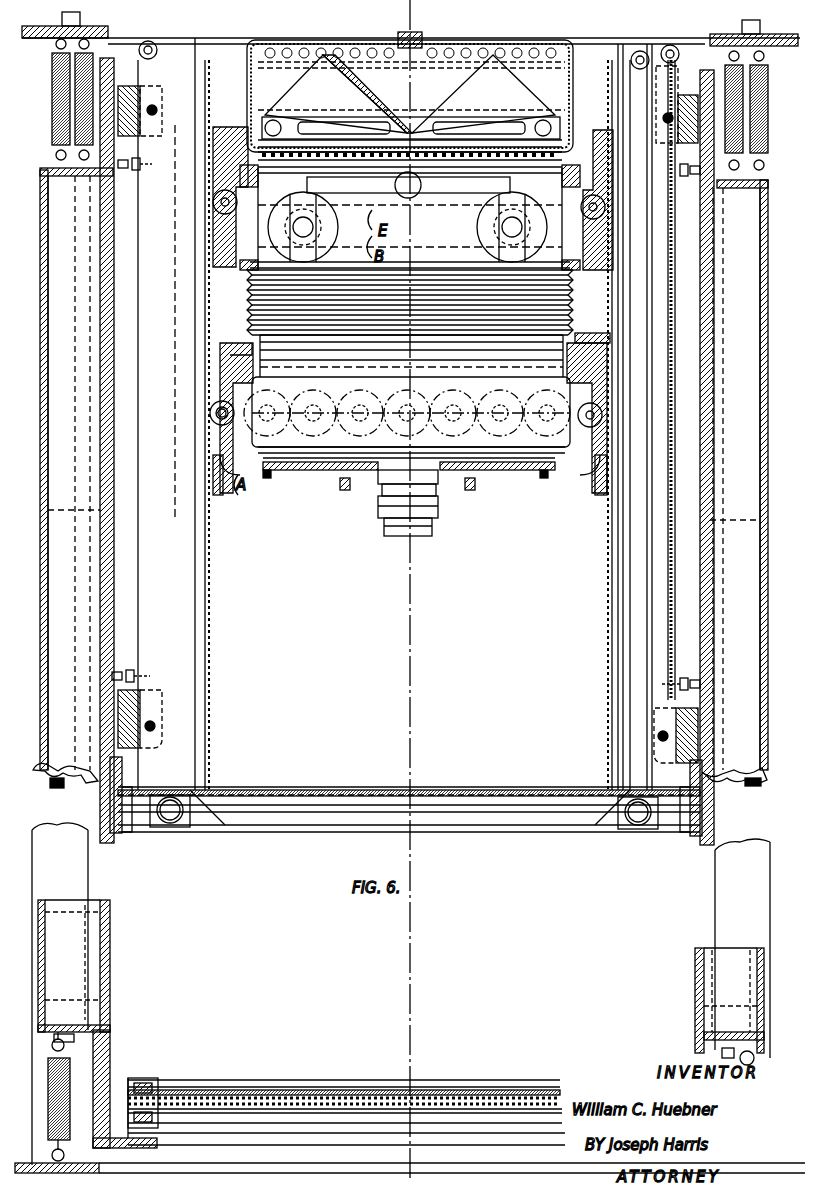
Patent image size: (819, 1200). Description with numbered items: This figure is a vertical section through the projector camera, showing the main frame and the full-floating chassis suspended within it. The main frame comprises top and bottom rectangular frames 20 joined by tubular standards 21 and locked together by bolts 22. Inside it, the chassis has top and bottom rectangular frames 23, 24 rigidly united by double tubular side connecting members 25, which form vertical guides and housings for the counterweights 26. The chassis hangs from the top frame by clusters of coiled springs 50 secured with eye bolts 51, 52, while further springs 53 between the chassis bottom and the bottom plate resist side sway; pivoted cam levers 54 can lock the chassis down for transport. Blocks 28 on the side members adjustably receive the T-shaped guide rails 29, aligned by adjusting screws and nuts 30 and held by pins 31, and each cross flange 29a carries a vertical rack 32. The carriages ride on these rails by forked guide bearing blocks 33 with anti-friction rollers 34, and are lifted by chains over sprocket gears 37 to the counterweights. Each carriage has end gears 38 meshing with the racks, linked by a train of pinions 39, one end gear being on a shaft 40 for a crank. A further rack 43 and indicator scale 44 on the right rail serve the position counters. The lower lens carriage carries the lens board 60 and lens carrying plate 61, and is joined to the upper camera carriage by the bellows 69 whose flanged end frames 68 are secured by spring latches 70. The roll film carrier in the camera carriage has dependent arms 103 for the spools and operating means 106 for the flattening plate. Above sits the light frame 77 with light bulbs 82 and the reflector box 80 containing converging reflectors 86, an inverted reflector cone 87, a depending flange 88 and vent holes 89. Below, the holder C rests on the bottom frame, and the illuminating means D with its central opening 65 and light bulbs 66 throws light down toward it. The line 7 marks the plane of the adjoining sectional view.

The rectangular frames 20 is at (97, 30).
The tubular standards 21 is at (80, 884).
The bolts 22 is at (55, 782).
The top rectangular frame 23 is at (225, 62).
The bottom rectangular frame 24 is at (202, 1140).
The side connecting members 25 is at (114, 646).
The counterweights 26 is at (404, 469).
The blocks 28 is at (150, 90).
The guide rails 29 is at (165, 606).
The cross flanges 29a is at (195, 624).
The adjusting screws and nuts 30 is at (680, 684).
The pins 31 is at (158, 110).
The rack 32 is at (210, 590).
The guide bearing block 33 is at (595, 485).
The anti-friction rollers 34 is at (612, 505).
The sprocket gears 37 is at (655, 46).
The end gears 38 is at (210, 410).
The train of pinions 39 is at (407, 394).
The shaft 40 is at (212, 418).
The rack 43 is at (668, 586).
The indicator scale 44 is at (645, 563).
The coiled springs 50 is at (52, 78).
The eye bolt 51 is at (765, 57).
The eye bolt 52 is at (765, 166).
The springs 53 is at (72, 1062).
The pivoted cam levers 54 is at (140, 50).
The lens board 60 is at (285, 470).
The lens carrying plate 61 is at (348, 480).
The central opening 65 is at (210, 812).
The light bulbs 66 is at (172, 823).
The flanged end frames 68 is at (456, 264).
The bellows 69 is at (250, 308).
The spring latches 70 is at (413, 415).
The light frame 77 is at (244, 130).
The reflector box 80 is at (247, 80).
The light bulbs 82 is at (411, 128).
The reflectors 86 is at (411, 94).
The reflector cone 87 is at (367, 94).
The depending flange 88 is at (484, 94).
The vent holes 89 is at (350, 50).
The dependent arms 103 is at (318, 248).
The operating means 106 is at (410, 194).
The section line 7 is at (406, 589).
The holder C is at (282, 1080).
The illuminating means D is at (690, 825).